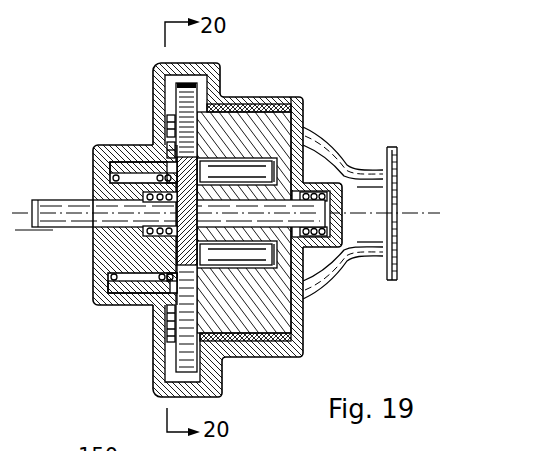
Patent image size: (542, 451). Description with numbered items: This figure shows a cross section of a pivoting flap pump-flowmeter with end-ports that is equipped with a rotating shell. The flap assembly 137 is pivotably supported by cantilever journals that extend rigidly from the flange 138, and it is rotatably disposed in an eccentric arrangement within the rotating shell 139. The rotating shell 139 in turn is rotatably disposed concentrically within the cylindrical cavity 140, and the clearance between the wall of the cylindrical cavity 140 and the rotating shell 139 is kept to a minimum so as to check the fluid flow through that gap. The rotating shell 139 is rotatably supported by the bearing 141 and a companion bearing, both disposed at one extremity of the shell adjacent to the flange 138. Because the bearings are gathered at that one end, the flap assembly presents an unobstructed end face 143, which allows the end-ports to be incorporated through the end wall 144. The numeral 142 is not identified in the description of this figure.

The flap assembly 137 is at (248, 143).
The flange 138 is at (190, 112).
The rotating shell 139 is at (262, 362).
The cylindrical cavity 140 is at (304, 322).
The bearing 141 is at (110, 270).
The seal 142 is at (163, 288).
The end face 143 is at (290, 172).
The end wall 144 is at (304, 278).